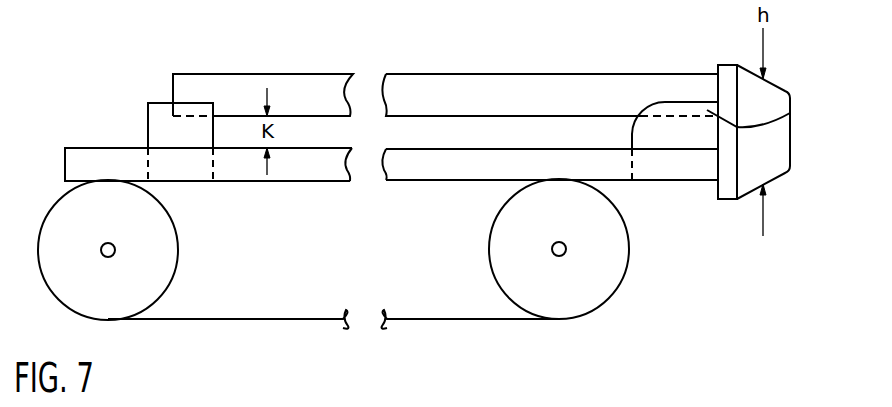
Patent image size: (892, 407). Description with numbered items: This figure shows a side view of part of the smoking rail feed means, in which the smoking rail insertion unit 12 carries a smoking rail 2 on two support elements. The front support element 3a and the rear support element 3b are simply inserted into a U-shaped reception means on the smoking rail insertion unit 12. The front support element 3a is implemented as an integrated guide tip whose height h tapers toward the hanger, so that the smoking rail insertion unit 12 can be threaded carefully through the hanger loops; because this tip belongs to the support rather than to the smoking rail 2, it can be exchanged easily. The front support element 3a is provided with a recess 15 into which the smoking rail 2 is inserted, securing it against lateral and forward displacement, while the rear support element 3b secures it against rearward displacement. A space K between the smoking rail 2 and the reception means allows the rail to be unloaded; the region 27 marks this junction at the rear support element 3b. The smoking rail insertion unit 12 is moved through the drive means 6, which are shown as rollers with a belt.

The smoking rail 2 is at (533, 81).
The smoking rail insertion unit 12 is at (77, 158).
The rear support element 3b is at (148, 125).
The gap 27 is at (173, 110).
The recess 15 is at (790, 115).
The front support element 3a is at (783, 161).
The drive means 6 is at (567, 307).